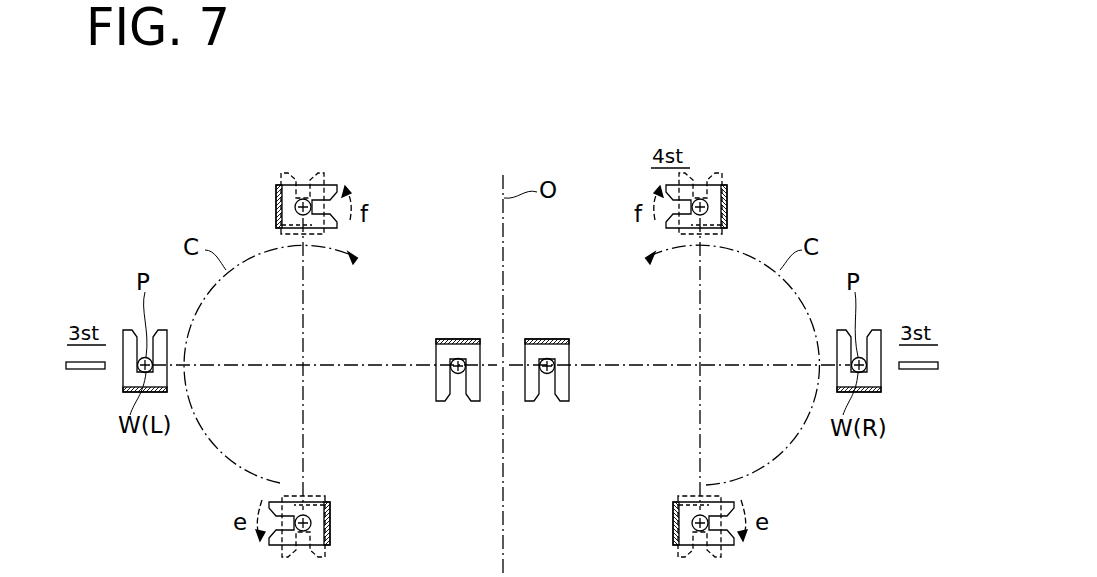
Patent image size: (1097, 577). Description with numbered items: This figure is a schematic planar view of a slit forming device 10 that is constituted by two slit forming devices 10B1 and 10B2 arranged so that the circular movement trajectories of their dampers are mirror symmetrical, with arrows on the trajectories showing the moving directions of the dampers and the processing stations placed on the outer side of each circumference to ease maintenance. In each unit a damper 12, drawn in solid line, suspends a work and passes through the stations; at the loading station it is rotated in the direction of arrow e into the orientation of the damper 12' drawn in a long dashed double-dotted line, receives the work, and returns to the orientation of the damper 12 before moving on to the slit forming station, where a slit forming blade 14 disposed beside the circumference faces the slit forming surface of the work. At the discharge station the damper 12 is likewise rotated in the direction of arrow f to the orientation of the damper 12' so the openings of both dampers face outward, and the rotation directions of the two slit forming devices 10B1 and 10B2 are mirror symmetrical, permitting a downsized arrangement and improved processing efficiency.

The slit forming device 10 is at (553, 131).
The slit forming device 10B1 is at (178, 171).
The slit forming device 10B2 is at (828, 171).
The damper 12 is at (504, 363).
The damper 12' is at (506, 339).
The slit forming blade 14 is at (93, 371).